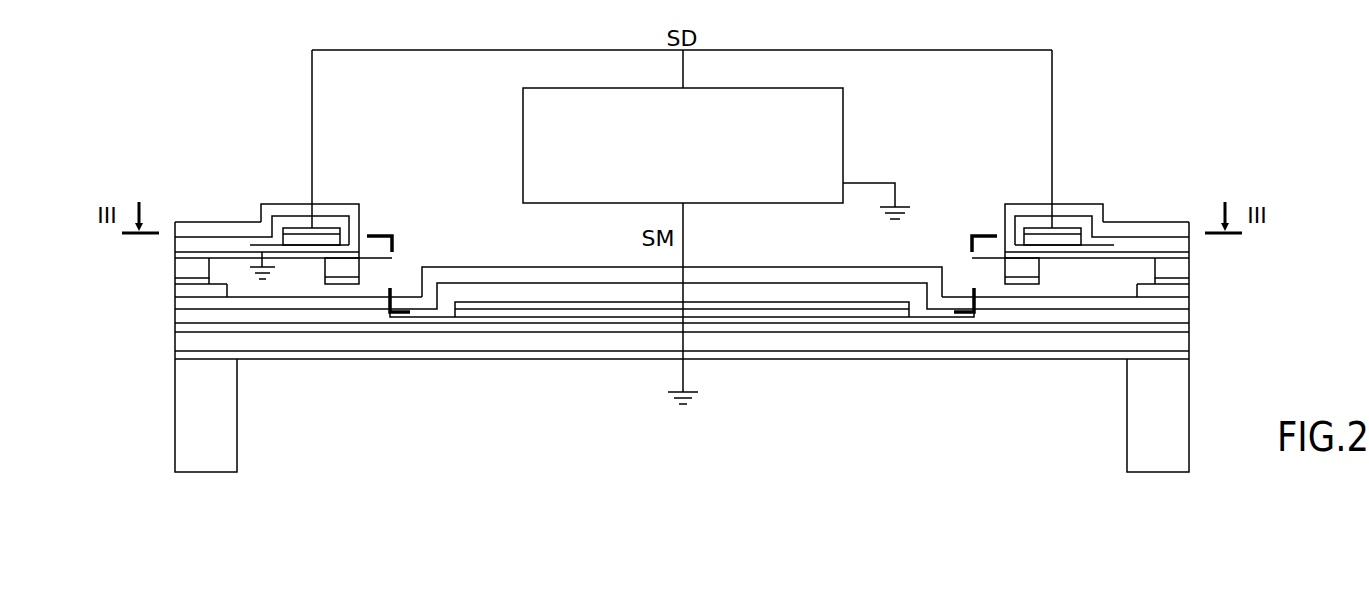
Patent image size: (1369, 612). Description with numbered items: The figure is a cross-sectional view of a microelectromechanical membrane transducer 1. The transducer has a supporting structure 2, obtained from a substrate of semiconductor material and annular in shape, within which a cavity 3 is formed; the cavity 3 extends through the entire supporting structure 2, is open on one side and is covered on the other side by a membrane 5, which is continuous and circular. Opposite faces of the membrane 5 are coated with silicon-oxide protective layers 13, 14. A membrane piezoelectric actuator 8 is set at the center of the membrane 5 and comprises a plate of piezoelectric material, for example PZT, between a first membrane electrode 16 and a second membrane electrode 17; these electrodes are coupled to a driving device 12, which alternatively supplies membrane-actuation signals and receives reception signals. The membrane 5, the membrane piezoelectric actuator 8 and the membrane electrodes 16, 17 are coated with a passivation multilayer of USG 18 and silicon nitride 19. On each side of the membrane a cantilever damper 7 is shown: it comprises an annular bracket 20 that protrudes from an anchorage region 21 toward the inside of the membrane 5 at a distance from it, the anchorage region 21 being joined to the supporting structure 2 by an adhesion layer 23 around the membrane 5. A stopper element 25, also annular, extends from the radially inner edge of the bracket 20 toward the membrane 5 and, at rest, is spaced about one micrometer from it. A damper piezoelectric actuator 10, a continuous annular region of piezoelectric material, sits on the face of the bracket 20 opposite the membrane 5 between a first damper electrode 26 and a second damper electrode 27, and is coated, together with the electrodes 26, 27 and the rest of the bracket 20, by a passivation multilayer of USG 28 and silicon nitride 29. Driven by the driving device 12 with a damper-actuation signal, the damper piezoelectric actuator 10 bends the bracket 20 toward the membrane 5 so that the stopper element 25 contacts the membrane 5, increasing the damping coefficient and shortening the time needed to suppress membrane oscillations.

The microelectromechanical membrane transducer 1 is at (207, 72).
The supporting structure 2 is at (237, 438).
The cavity 3 is at (542, 446).
The membrane 5 is at (483, 342).
The cantilever damper 7 is at (221, 142).
The membrane piezoelectric actuator 8 is at (723, 313).
The damper piezoelectric actuator 10 is at (307, 230).
The driving device 12 is at (522, 125).
The silicon-oxide protective layer 13 is at (1040, 355).
The silicon-oxide protective layer 14 is at (1100, 327).
The first membrane electrode 16 is at (431, 318).
The second membrane electrode 17 is at (500, 303).
The USG layer 18 is at (798, 292).
The silicon nitride layer 19 is at (852, 273).
The bracket 20 is at (281, 259).
The anchorage region 21 is at (166, 270).
The adhesion layer 23 is at (176, 290).
The stopper element 25 is at (371, 269).
The first damper electrode 26 is at (258, 246).
The second damper electrode 27 is at (322, 230).
The USG layer 28 is at (188, 242).
The silicon nitride layer 29 is at (205, 228).